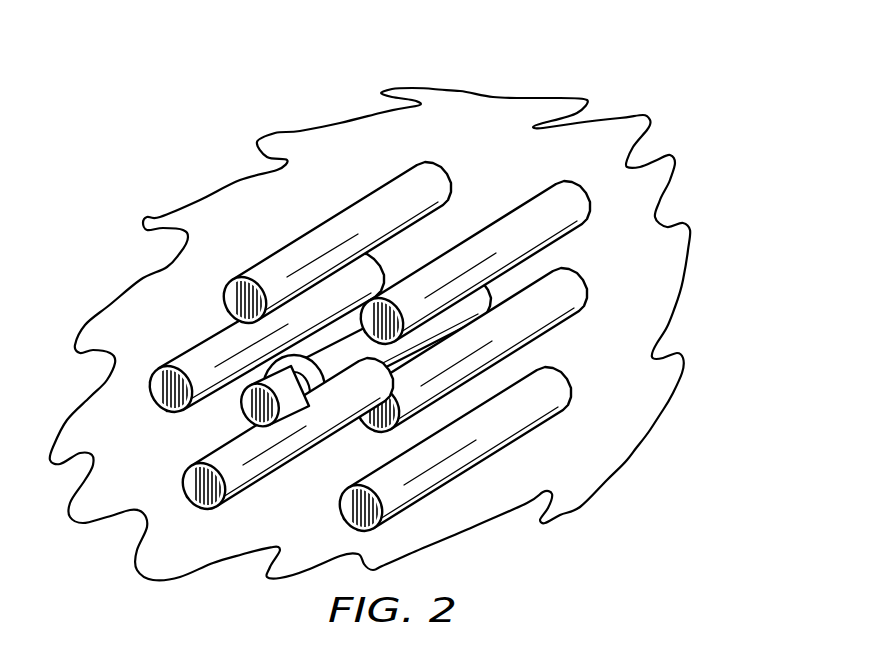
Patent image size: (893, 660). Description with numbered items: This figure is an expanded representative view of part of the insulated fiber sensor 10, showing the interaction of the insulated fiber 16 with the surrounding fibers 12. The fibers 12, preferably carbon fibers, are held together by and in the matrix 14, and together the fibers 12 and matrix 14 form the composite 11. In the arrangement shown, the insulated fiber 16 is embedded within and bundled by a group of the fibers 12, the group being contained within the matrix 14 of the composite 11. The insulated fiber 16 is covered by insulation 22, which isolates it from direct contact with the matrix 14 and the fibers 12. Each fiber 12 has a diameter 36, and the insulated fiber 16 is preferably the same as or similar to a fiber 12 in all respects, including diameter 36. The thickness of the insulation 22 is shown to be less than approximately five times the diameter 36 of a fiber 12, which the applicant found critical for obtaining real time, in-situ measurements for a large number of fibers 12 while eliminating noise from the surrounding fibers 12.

The insulated fiber sensor 10 is at (712, 172).
The composite 11 is at (492, 72).
The fiber 12 is at (330, 220).
The matrix 14 is at (642, 112).
The insulated fiber 16 is at (239, 396).
The insulation 22 is at (332, 363).
The diameter 36 is at (570, 165).